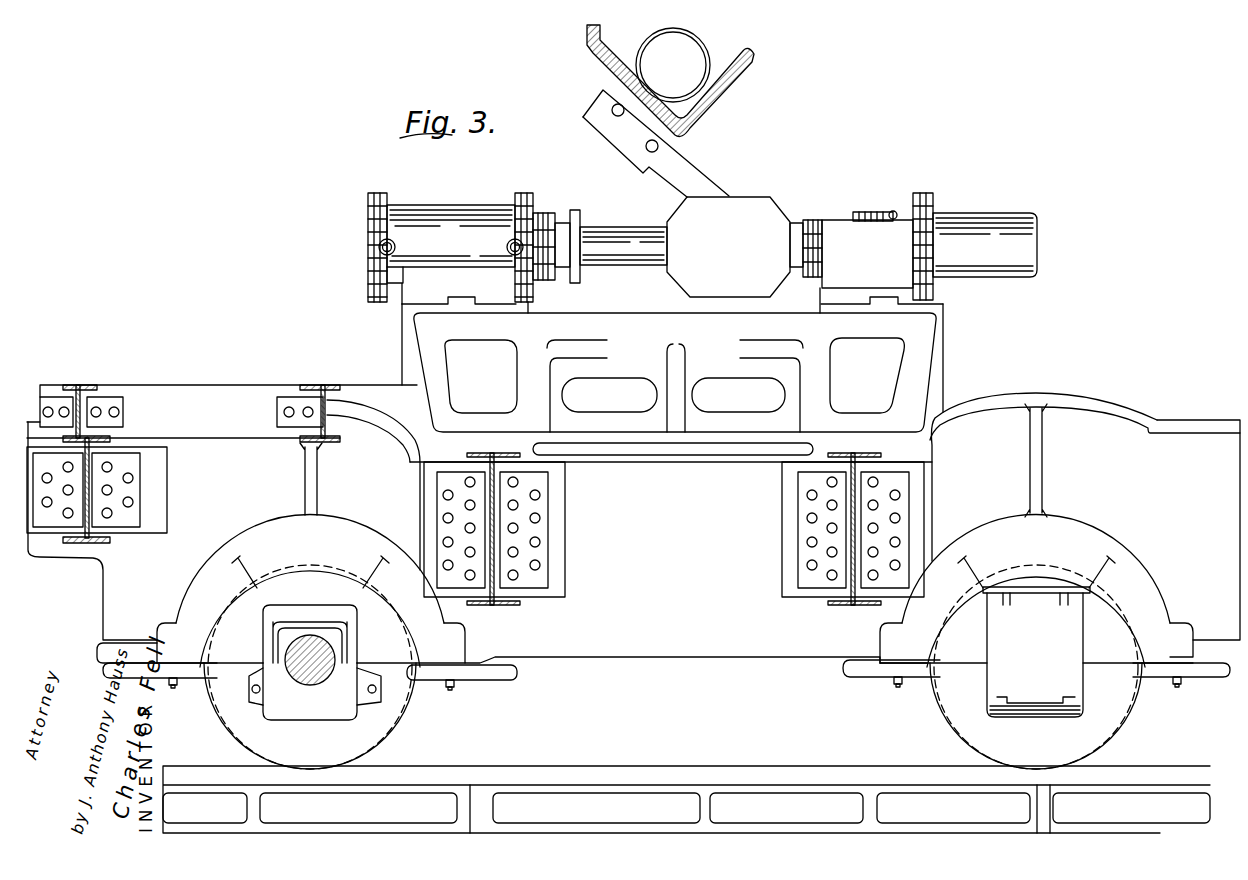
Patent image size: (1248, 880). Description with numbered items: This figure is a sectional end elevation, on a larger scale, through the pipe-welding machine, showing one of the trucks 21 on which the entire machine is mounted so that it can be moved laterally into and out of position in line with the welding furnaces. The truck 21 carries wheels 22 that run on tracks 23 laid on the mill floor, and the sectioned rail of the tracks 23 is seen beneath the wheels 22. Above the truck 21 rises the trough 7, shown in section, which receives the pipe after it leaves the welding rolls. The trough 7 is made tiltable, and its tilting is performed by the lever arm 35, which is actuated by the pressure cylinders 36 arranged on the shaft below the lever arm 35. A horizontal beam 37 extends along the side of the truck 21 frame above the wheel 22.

The trough 7 is at (733, 90).
The lever arm 35 is at (699, 167).
The pressure cylinders 36 is at (457, 206).
The beam 37 is at (178, 385).
The trucks 21 is at (692, 640).
The wheels 22 is at (403, 727).
The tracks 23 is at (697, 765).